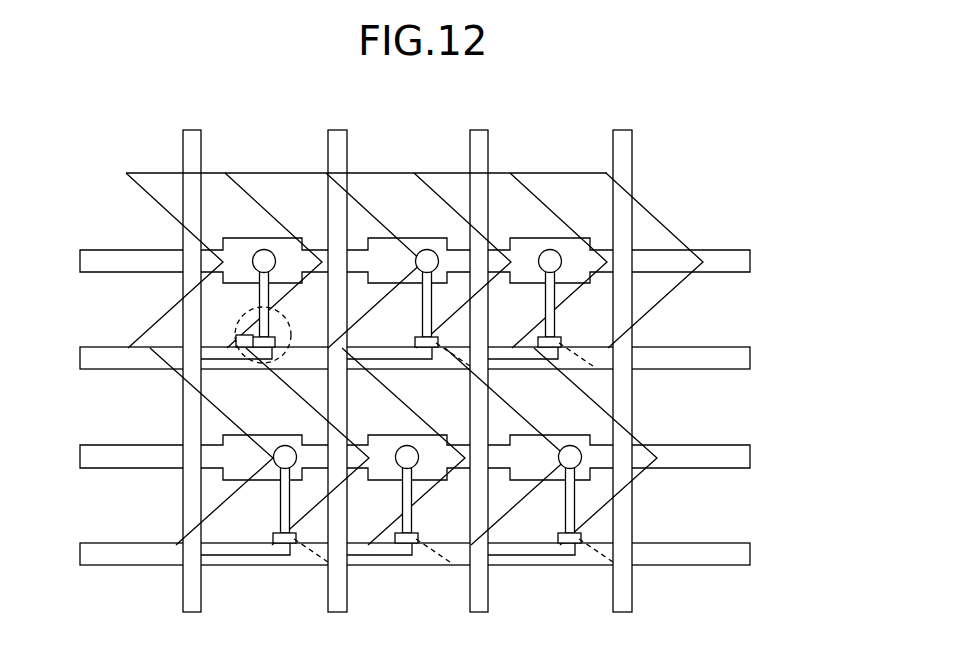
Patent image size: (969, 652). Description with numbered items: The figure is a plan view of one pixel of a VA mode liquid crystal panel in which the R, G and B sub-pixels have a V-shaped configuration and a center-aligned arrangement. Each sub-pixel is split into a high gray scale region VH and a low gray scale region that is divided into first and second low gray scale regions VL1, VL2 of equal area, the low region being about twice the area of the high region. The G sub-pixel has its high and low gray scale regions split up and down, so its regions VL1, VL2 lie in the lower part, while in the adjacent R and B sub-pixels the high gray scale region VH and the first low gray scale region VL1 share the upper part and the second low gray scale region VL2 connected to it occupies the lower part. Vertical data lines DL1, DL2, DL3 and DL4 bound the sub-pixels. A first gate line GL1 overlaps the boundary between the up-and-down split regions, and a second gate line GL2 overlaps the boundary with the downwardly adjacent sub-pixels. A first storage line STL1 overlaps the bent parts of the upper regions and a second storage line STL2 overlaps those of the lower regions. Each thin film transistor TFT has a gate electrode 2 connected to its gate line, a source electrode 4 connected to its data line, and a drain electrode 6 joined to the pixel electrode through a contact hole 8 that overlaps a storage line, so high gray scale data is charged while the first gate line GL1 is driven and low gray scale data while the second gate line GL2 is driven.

The first data line DL1 is at (192, 130).
The second data line DL2 is at (337, 130).
The third data line DL3 is at (479, 130).
The fourth data line DL4 is at (622, 130).
The first storage line STL1 is at (750, 261).
The second storage line STL2 is at (750, 457).
The first gate line GL1 is at (750, 358).
The second gate line GL2 is at (750, 554).
The R sub-pixel R is at (255, 172).
The G sub-pixel G is at (384, 172).
The B sub-pixel B is at (541, 172).
The high gray scale region VH is at (372, 208).
The first low gray scale region VL1 is at (443, 309).
The second low gray scale region VL2 is at (409, 410).
The thin film transistor TFT is at (258, 307).
The gate electrode 2 is at (237, 341).
The source electrode 4 is at (286, 338).
The drain electrode 6 is at (288, 306).
The contact hole 8 is at (282, 282).